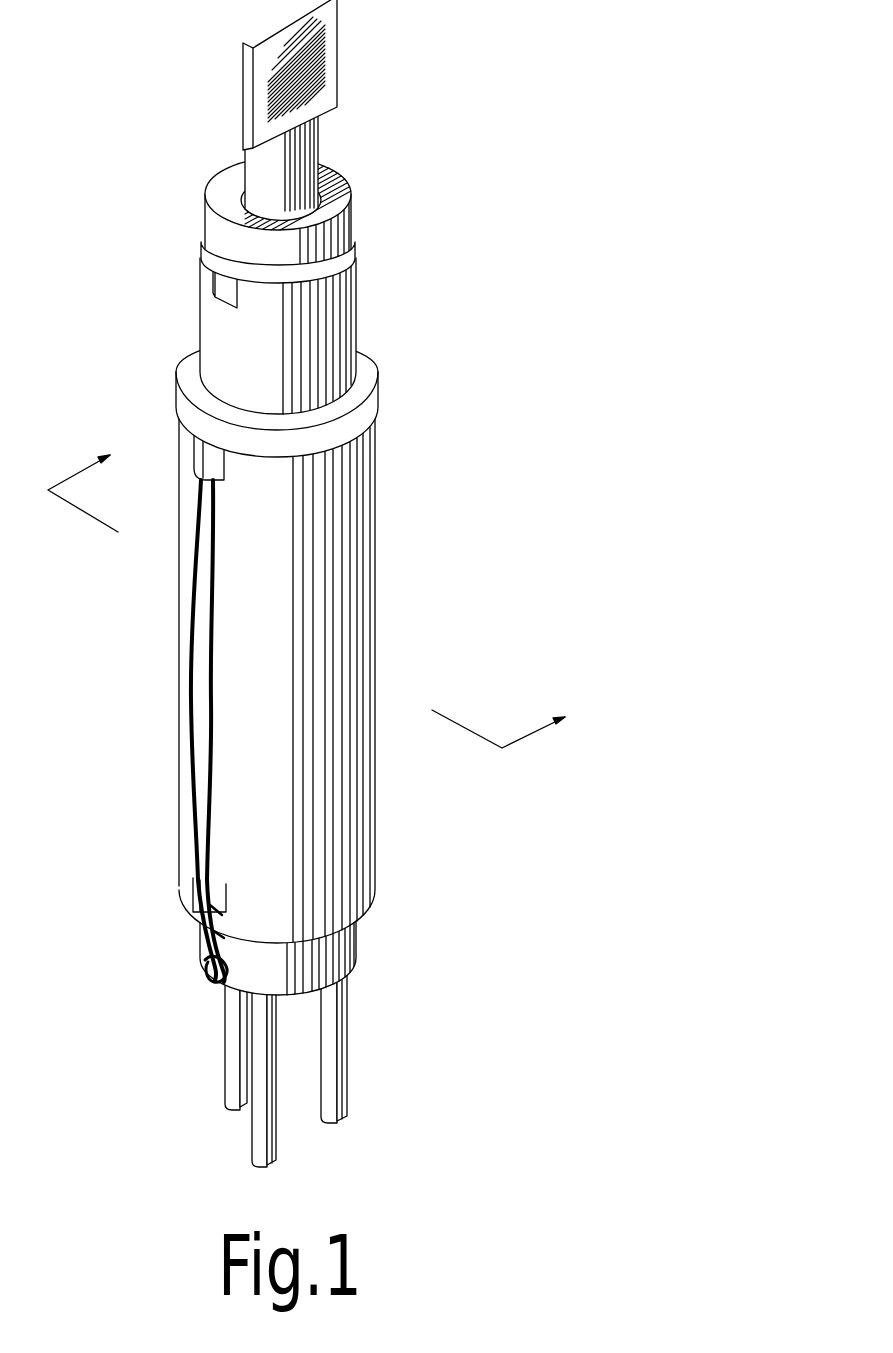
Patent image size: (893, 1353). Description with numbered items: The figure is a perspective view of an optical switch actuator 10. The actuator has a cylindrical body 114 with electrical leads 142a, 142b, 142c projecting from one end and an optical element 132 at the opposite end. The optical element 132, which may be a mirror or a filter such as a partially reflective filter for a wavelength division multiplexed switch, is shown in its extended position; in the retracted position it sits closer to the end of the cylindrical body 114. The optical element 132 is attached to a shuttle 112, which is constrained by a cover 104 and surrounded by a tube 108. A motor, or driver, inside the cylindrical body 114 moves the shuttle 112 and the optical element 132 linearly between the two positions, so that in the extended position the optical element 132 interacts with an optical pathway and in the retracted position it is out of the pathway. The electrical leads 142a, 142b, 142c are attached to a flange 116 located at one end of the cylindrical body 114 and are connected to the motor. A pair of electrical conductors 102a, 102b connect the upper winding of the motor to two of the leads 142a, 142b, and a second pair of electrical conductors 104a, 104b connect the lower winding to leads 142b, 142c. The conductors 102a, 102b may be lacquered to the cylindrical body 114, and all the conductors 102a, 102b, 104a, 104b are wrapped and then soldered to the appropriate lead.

The actuator 10 is at (90, 222).
The optical element 132 is at (340, 23).
The shuttle 112 is at (317, 142).
The cover 104 is at (343, 173).
The tube 108 is at (357, 288).
The cylindrical body 114 is at (385, 633).
The flange 116 is at (357, 930).
The electrical conductor 102a is at (213, 548).
The electrical conductor 102b is at (205, 600).
The electrical conductor 104a is at (200, 938).
The electrical conductor 104b is at (205, 965).
The electrical lead 142a is at (225, 1045).
The electrical lead 142b is at (252, 1135).
The electrical lead 142c is at (347, 1038).